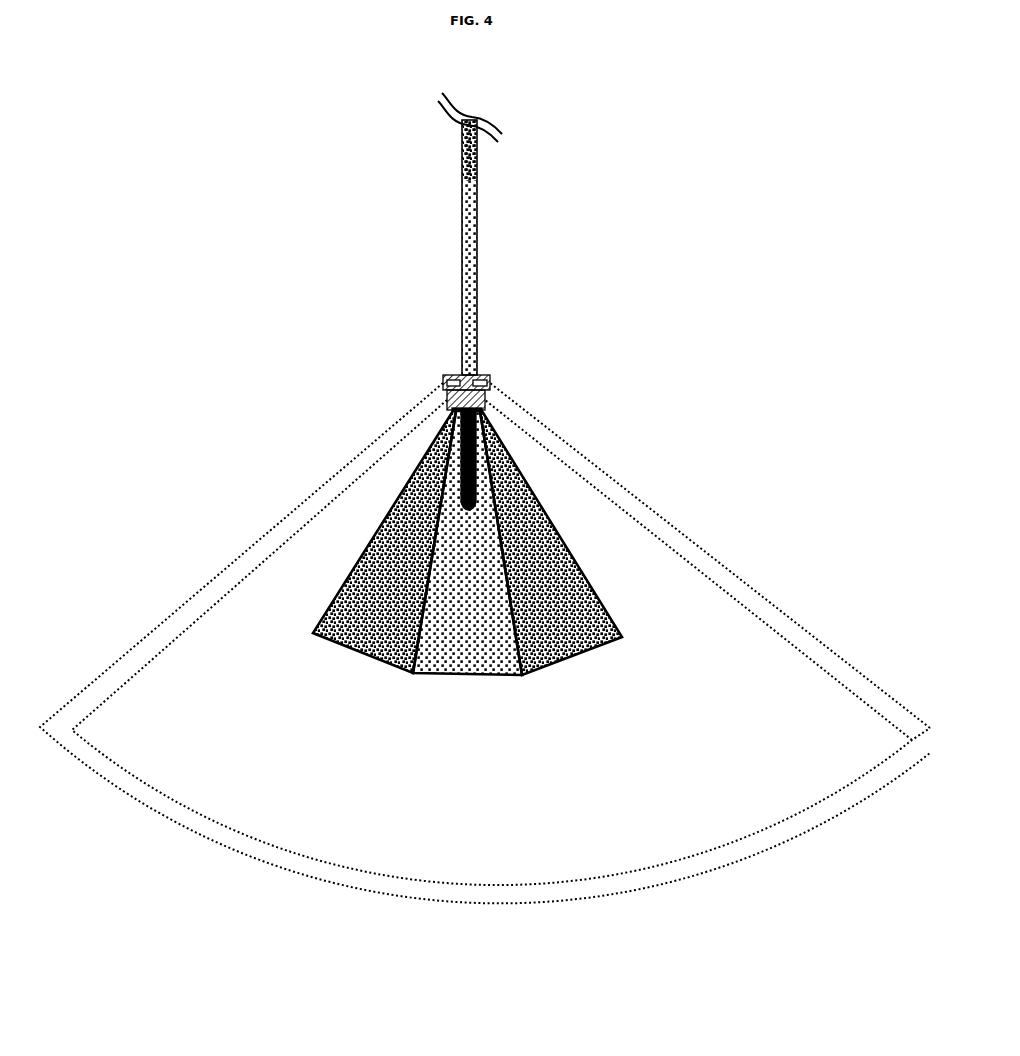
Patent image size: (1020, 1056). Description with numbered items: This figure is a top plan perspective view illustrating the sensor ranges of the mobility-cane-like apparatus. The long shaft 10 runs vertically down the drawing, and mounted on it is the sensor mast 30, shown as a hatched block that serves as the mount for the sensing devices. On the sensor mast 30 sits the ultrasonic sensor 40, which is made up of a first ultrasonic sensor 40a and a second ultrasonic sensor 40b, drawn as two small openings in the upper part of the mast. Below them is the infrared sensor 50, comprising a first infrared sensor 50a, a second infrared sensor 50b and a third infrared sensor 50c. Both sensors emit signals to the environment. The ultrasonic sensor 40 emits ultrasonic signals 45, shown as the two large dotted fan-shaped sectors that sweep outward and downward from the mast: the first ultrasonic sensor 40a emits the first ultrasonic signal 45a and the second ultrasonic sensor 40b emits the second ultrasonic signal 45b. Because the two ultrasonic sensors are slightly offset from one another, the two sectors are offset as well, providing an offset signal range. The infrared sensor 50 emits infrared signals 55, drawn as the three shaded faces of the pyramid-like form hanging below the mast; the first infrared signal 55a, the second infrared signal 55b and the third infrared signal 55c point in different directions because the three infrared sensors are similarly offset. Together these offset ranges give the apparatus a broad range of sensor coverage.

The shaft 10 is at (477, 195).
The sensor mast 30 is at (485, 371).
The ultrasonic sensor 40 is at (417, 357).
The first ultrasonic sensor 40a is at (443, 381).
The second ultrasonic sensor 40b is at (461, 374).
The ultrasonic signals 45 is at (485, 643).
The first ultrasonic signal 45a is at (287, 514).
The second ultrasonic signal 45b is at (268, 560).
The infrared sensor 50 is at (536, 385).
The first infrared sensor 50a is at (489, 393).
The second infrared sensor 50b is at (458, 408).
The third infrared sensor 50c is at (486, 407).
The infrared signals 55 is at (467, 614).
The first infrared signal 55a is at (408, 672).
The second infrared signal 55b is at (463, 677).
The third infrared signal 55c is at (551, 585).